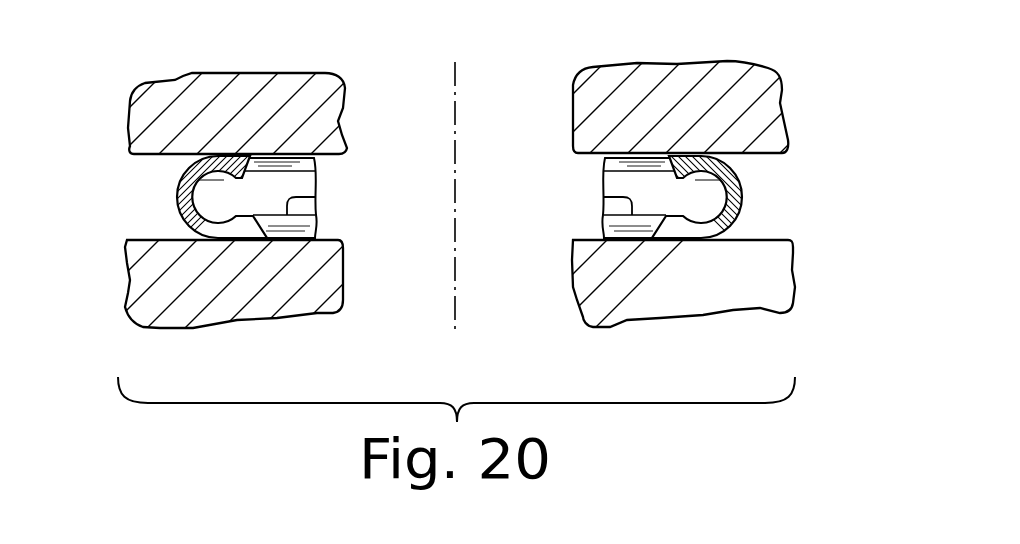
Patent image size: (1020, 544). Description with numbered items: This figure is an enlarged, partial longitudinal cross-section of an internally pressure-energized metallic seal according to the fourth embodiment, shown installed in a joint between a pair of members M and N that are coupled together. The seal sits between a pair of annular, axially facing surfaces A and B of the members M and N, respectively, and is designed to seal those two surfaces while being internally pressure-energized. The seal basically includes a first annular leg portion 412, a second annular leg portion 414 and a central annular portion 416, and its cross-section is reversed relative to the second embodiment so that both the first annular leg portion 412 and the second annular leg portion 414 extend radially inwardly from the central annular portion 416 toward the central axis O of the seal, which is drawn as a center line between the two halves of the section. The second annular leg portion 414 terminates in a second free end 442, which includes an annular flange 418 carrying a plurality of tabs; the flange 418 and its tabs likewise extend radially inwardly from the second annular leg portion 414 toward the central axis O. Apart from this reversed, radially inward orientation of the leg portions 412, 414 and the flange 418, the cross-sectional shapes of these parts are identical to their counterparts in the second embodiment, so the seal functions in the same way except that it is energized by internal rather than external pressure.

The first annular leg portion 412 is at (697, 152).
The second annular leg portion 414 is at (698, 240).
The central annular portion 416 is at (743, 197).
The annular flange 418 is at (604, 197).
The second free end 442 is at (315, 197).
The axially facing annular surface A is at (150, 153).
The axially facing annular surface B is at (149, 240).
The member M is at (573, 77).
The member N is at (572, 303).
The central axis O is at (457, 137).